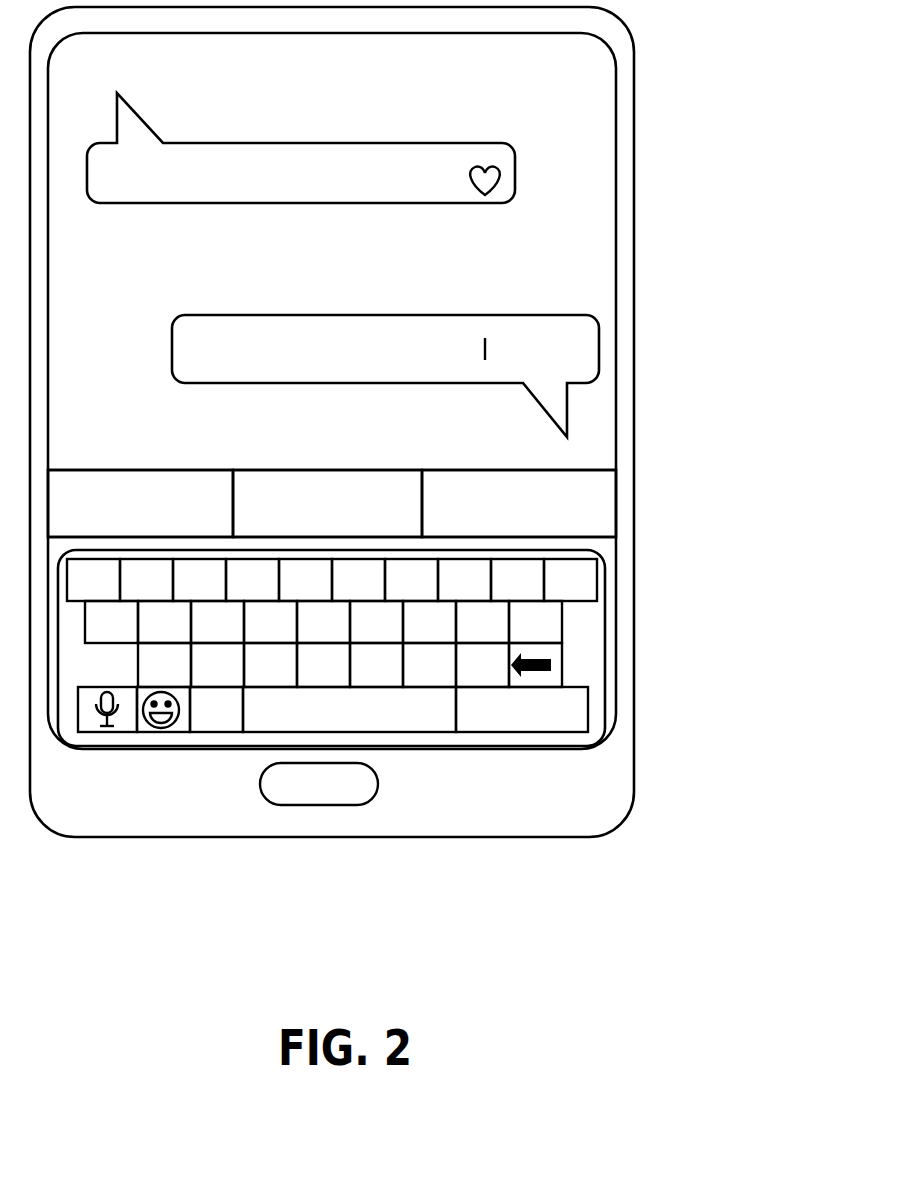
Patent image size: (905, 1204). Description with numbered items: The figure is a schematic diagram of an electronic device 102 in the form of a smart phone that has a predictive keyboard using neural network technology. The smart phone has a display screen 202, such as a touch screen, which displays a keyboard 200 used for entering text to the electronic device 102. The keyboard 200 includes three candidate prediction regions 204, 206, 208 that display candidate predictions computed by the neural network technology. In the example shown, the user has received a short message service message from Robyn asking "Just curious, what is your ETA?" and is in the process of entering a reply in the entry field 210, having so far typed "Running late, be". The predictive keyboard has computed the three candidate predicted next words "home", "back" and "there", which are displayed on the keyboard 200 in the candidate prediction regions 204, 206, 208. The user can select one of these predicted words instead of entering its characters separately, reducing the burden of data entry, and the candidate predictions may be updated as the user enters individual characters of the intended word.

The electronic device 102 is at (634, 45).
The display screen 202 is at (600, 130).
The keyboard 200 is at (592, 640).
The candidate prediction region 204 is at (157, 481).
The candidate prediction region 206 is at (341, 481).
The candidate prediction region 208 is at (535, 481).
The entry field 210 is at (172, 350).